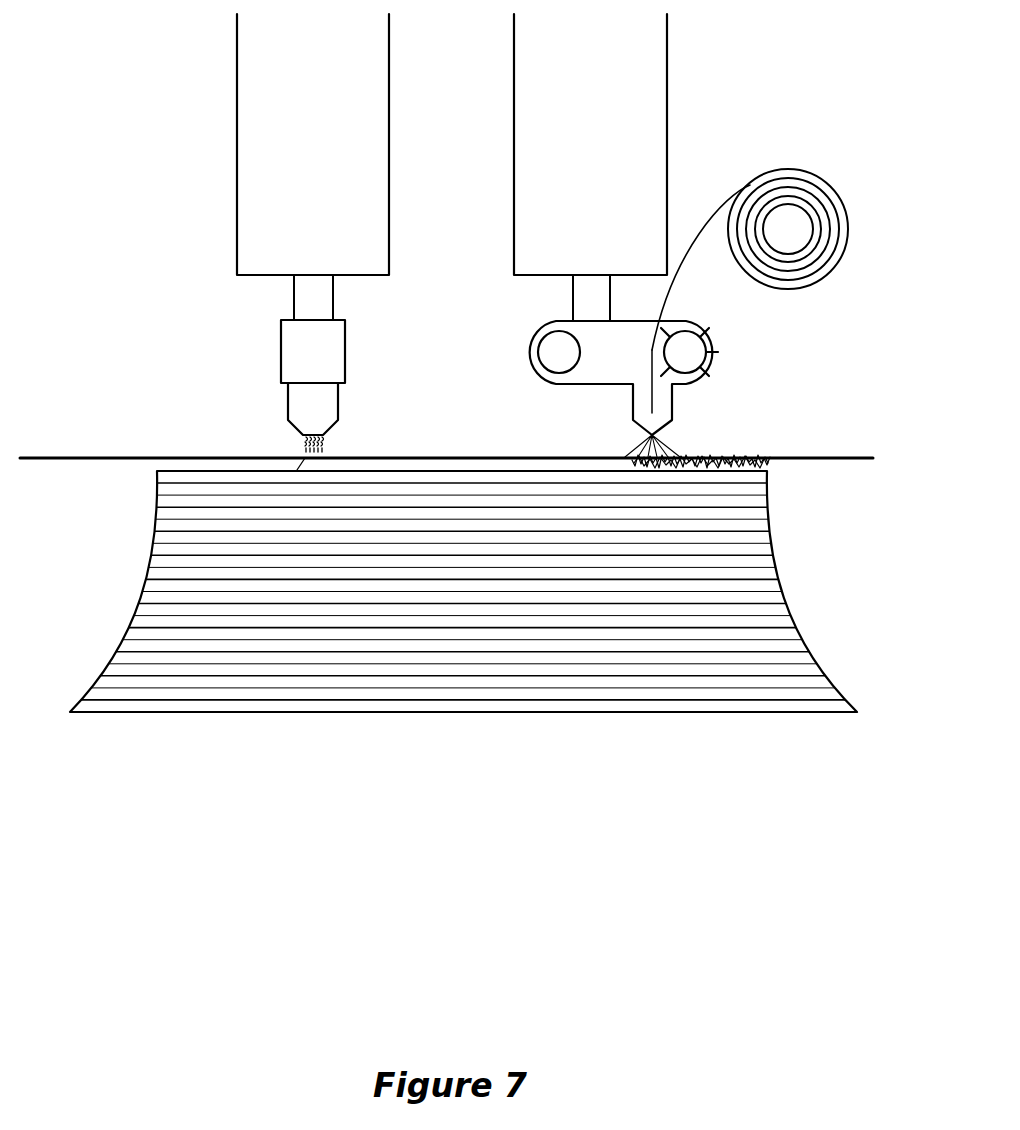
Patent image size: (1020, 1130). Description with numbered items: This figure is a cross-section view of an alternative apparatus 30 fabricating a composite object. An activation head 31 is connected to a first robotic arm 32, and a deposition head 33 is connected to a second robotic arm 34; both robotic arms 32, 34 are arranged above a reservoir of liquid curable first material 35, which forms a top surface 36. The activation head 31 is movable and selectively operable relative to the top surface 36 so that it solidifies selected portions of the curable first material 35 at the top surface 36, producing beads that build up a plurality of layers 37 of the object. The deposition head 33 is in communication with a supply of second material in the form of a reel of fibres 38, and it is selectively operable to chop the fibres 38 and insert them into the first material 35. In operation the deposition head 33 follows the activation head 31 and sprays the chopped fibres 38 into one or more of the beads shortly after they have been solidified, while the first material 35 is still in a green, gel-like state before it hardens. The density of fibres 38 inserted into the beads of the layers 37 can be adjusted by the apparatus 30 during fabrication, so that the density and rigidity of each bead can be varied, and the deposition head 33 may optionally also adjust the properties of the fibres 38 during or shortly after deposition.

The apparatus 30 is at (160, 149).
The activation head 31 is at (298, 405).
The first robotic arm 32 is at (258, 210).
The deposition head 33 is at (705, 343).
The second robotic arm 34 is at (535, 209).
The liquid curable first material 35 is at (465, 591).
The top surface 36 is at (85, 458).
The layers 37 is at (172, 548).
The fibres 38 is at (826, 237).